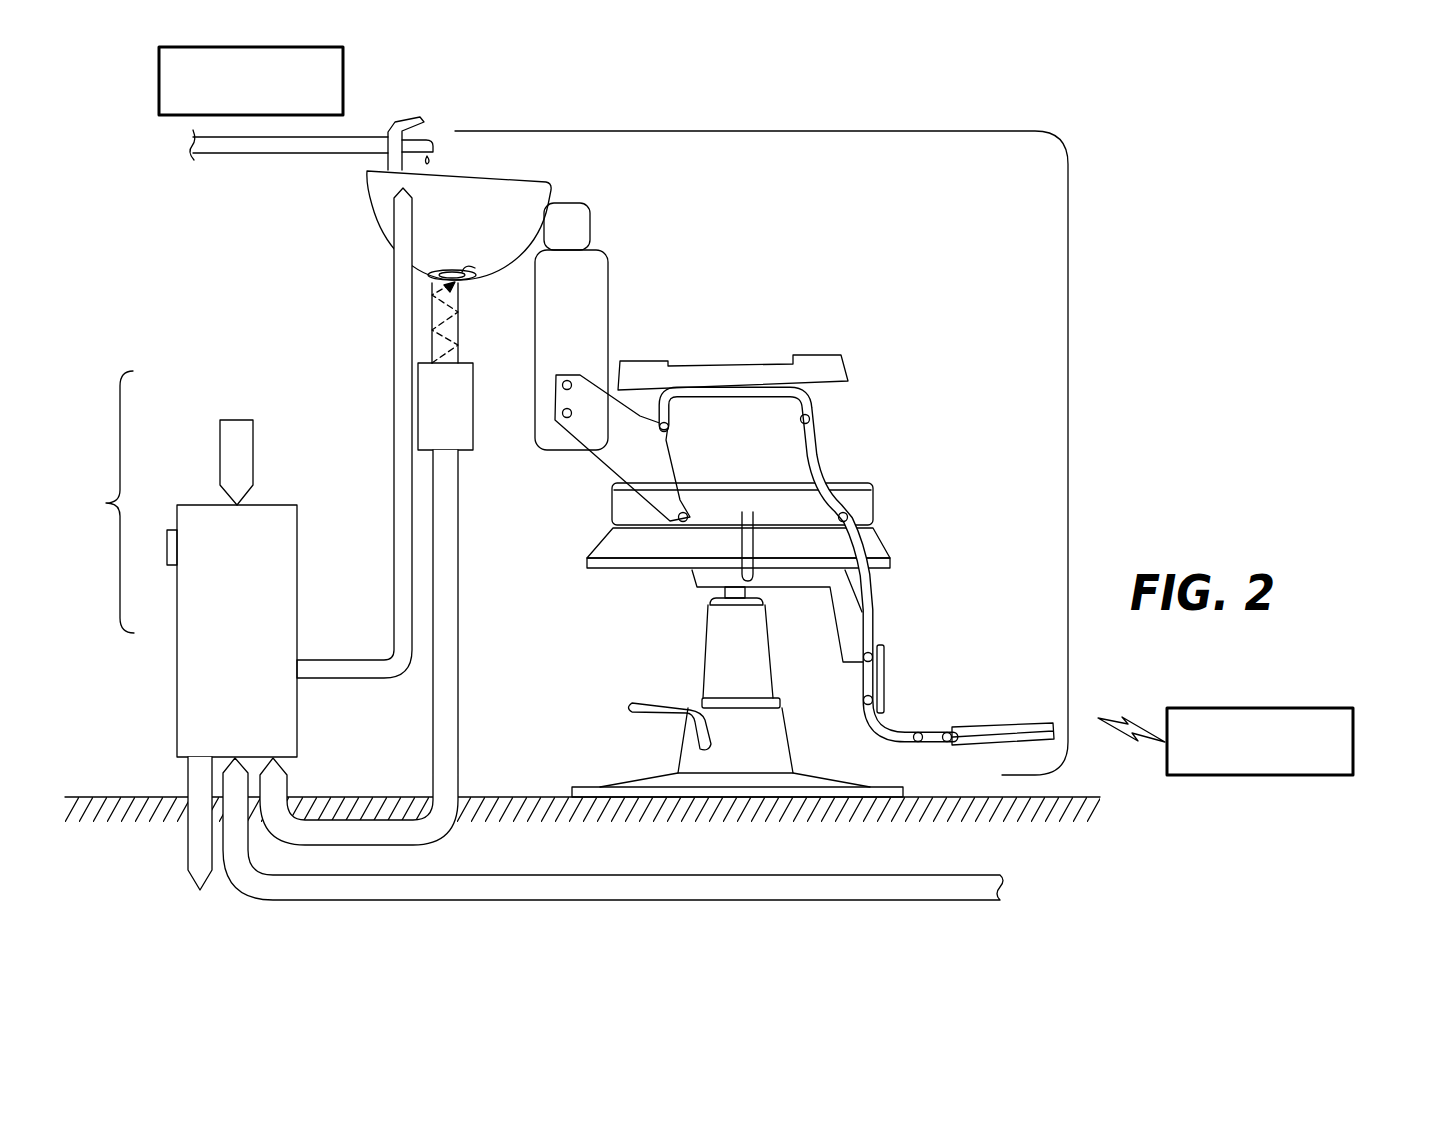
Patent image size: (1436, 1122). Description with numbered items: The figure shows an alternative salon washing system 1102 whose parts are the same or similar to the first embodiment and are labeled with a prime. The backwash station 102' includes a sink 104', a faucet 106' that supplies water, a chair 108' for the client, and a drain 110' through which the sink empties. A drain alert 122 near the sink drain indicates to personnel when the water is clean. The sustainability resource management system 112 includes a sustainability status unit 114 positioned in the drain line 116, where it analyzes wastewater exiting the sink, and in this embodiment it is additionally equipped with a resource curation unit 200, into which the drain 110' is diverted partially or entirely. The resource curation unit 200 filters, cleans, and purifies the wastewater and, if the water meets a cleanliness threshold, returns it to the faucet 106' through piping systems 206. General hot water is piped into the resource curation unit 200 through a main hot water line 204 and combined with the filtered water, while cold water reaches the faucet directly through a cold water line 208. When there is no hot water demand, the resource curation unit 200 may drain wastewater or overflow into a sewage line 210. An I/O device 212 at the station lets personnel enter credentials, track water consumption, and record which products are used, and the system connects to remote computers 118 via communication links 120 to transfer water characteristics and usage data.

The backwash station 102' is at (806, 453).
The washing system 1102 is at (1198, 170).
The input/output device (I/O device) 212 is at (159, 78).
The cold water line 208 is at (281, 153).
The faucet 106' is at (392, 123).
The sink 104' is at (459, 210).
The drain 110' is at (478, 289).
The drain alert 122 is at (458, 270).
The sustainability status unit 114 is at (432, 405).
The piping systems 206 is at (395, 500).
The sustainability resource management system 112 is at (102, 502).
The main hot water line 204 is at (225, 443).
The resource curation unit 200 is at (200, 597).
The drain line 116 is at (460, 735).
The sewage line 210 is at (188, 840).
The chair 108' is at (794, 500).
The remote computers 118 is at (1353, 738).
The communication links 120 is at (1122, 718).